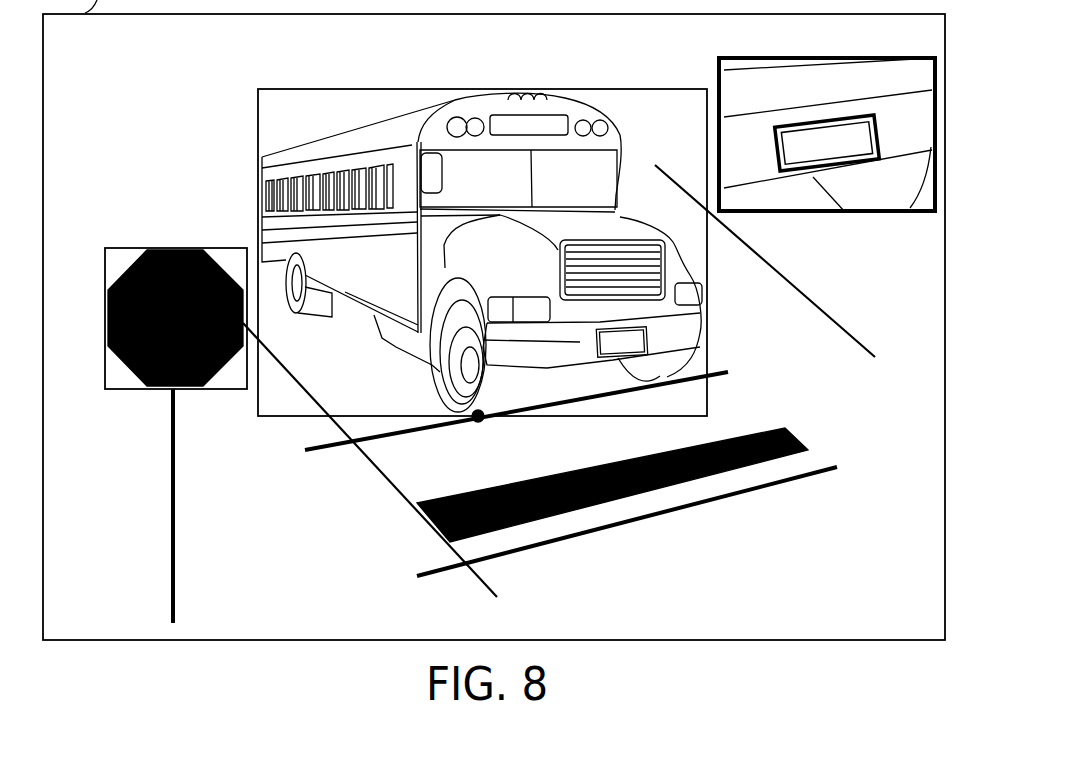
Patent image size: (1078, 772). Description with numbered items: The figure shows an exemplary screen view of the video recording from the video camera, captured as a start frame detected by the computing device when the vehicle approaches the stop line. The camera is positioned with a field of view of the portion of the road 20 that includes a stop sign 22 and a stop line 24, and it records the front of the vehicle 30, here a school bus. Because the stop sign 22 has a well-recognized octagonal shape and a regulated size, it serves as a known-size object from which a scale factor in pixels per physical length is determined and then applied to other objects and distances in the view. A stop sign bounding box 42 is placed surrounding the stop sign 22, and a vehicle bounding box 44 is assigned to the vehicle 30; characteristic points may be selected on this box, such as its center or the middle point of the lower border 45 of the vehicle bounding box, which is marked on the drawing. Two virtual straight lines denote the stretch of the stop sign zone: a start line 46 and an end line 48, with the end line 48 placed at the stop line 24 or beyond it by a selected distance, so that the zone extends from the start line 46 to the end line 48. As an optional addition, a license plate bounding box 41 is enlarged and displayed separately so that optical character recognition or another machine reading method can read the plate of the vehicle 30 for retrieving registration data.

The road 20 is at (820, 397).
The stop sign 22 is at (135, 370).
The stop line 24 is at (417, 510).
The vehicle 30 is at (350, 128).
The license plate bounding box 41 is at (818, 216).
The stop sign bounding box 42 is at (120, 248).
The vehicle bounding box 44 is at (257, 118).
The lower border of the vehicle bounding box 45 is at (478, 422).
The start line 46 is at (321, 450).
The end line 48 is at (578, 535).